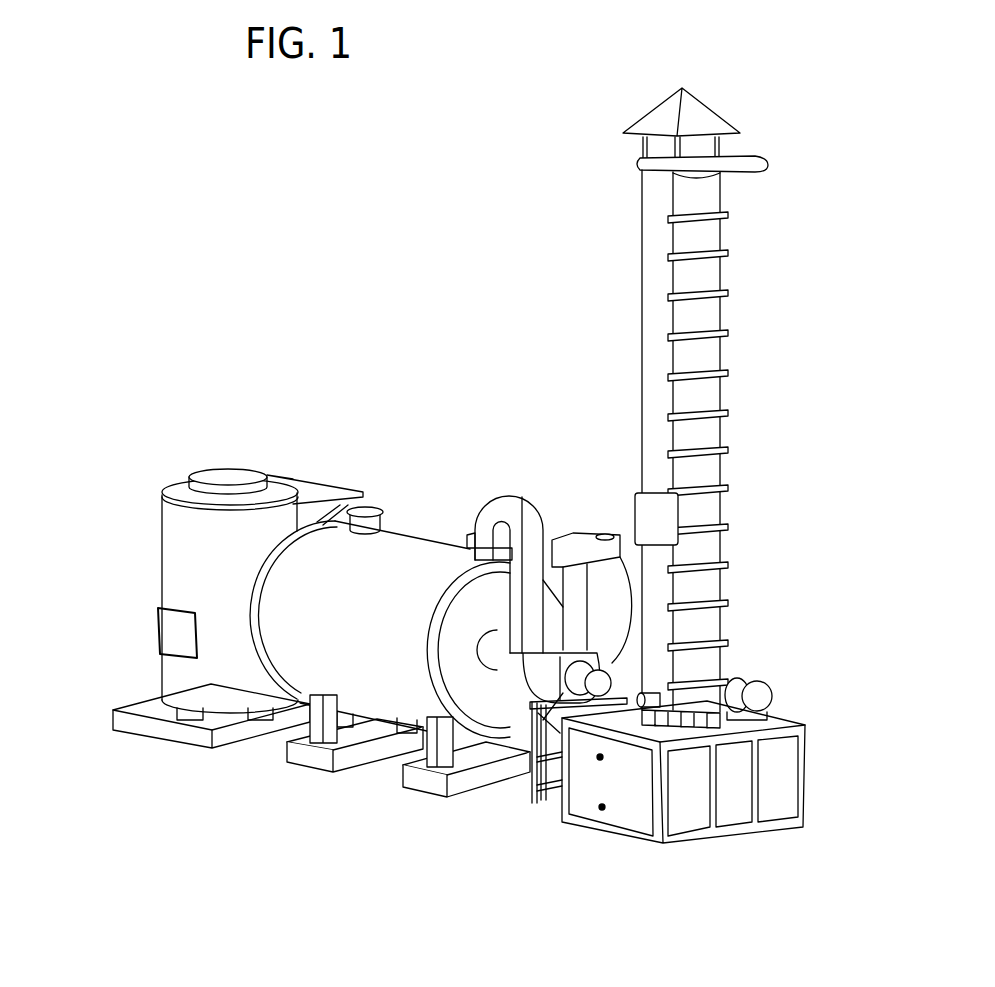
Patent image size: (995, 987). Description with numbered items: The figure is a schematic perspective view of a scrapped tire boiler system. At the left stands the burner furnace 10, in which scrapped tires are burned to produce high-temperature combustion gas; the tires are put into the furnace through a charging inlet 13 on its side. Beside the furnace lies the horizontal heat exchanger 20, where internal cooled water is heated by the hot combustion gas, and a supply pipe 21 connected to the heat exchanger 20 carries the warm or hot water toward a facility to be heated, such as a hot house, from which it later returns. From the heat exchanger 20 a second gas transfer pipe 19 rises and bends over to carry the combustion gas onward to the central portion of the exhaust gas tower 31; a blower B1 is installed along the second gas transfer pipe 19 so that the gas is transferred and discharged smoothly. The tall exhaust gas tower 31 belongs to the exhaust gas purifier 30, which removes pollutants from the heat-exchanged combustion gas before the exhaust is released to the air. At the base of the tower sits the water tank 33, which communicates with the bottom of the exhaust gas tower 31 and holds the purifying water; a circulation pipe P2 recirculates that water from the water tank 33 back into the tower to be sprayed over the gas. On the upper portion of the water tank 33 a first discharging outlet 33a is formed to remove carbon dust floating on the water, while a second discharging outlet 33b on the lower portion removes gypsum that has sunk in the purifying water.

The burner furnace 10 is at (160, 543).
The charging inlet 13 is at (160, 637).
The second gas transfer pipe 19 is at (518, 498).
The heat exchanger 20 is at (323, 658).
The supply pipe 21 is at (375, 509).
The exhaust gas purifier 30 is at (732, 408).
The exhaust gas tower 31 is at (713, 393).
The water tank 33 is at (663, 824).
The first discharging outlet 33a is at (600, 758).
The second discharging outlet 33b is at (603, 812).
The blower B1 is at (611, 616).
The circulation pipe P2 is at (760, 690).